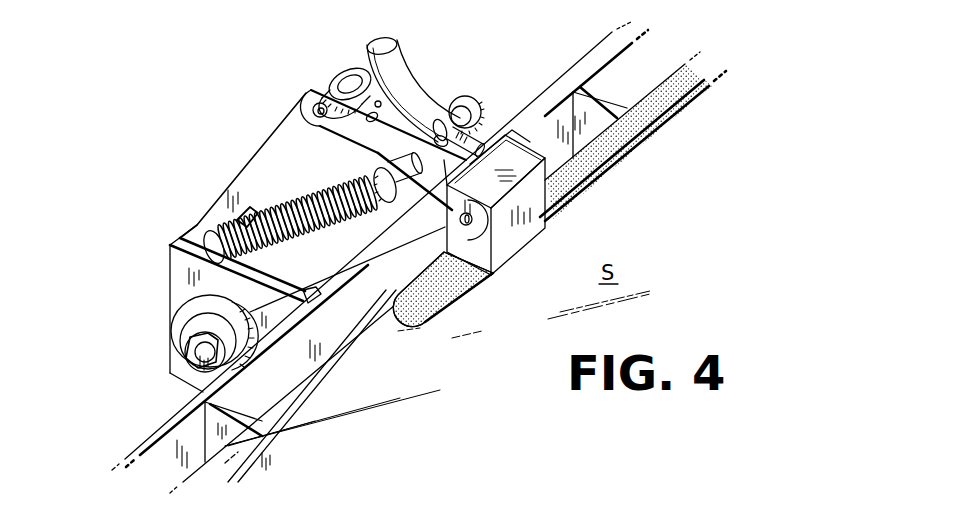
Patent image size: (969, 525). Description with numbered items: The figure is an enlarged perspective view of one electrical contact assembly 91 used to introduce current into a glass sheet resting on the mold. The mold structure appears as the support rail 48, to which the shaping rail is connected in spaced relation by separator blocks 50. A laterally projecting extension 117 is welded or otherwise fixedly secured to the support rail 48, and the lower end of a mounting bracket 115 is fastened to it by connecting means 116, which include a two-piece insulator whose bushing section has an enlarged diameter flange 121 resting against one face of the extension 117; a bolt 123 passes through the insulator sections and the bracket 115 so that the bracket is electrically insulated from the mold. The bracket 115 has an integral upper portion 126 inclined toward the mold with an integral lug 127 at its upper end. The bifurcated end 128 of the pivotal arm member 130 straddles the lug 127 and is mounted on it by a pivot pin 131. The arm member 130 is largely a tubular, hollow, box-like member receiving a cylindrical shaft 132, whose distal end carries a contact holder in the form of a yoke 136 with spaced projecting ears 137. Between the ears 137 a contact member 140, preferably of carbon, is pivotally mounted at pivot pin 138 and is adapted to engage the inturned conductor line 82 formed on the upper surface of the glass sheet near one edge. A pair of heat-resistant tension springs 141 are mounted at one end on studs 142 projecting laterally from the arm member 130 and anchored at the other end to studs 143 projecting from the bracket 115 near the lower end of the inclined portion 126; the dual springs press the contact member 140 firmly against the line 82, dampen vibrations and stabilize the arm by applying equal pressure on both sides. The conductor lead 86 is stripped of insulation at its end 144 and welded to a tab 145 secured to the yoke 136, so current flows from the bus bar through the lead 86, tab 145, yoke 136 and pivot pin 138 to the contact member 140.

The support rail 48 is at (173, 419).
The separator blocks 50 is at (232, 408).
The inturned portion of conductor line 82 is at (443, 308).
The lead 86 is at (410, 87).
The contact assembly 91 is at (200, 102).
The mounting bracket 115 is at (208, 202).
The connecting means 116 is at (137, 347).
The extension 117 is at (177, 287).
The flange 121 is at (185, 313).
The bolt 123 is at (195, 358).
The upper portion 126 is at (253, 173).
The lug 127 is at (338, 80).
The bifurcated end 128 is at (353, 62).
The arm member 130 is at (357, 132).
The pivot pin 131 is at (306, 114).
The shaft 132 is at (376, 90).
The yoke 136 is at (536, 126).
The ears 137 is at (590, 182).
The pivot pin 138 is at (460, 225).
The contact member 140 is at (527, 237).
The tension springs 141 is at (447, 108).
The studs 142 is at (482, 103).
The studs 143 is at (204, 258).
The stripped end of conductor lead 144 is at (430, 150).
The tab 145 is at (493, 146).